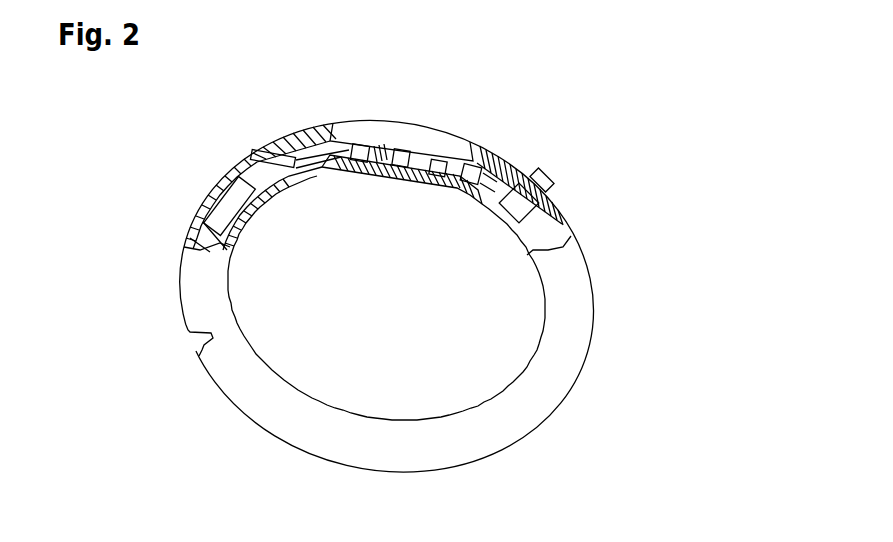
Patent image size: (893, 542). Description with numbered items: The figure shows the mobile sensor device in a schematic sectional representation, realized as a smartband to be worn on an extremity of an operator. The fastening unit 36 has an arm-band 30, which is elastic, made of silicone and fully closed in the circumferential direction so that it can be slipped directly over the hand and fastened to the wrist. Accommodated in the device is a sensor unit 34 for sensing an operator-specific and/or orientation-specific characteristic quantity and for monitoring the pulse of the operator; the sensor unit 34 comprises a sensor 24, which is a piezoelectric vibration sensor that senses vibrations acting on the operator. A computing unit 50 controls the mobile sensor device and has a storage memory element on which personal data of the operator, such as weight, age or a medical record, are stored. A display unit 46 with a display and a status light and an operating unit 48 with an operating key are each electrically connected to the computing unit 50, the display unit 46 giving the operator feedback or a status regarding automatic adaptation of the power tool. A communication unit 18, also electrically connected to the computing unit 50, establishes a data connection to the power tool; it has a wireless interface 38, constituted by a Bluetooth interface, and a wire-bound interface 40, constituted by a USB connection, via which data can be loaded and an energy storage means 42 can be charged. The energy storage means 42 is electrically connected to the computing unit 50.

The communication unit 18 is at (345, 185).
The sensor 24 is at (403, 150).
The arm-band 30 is at (413, 296).
The sensor unit 34 is at (405, 190).
The fastening unit 36 is at (603, 303).
The wireless interface 38 is at (362, 145).
The wire-bound interface 40 is at (250, 156).
The energy storage means 42 is at (218, 212).
The display unit 46 is at (457, 143).
The operating unit 48 is at (543, 178).
The computing unit 50 is at (440, 160).